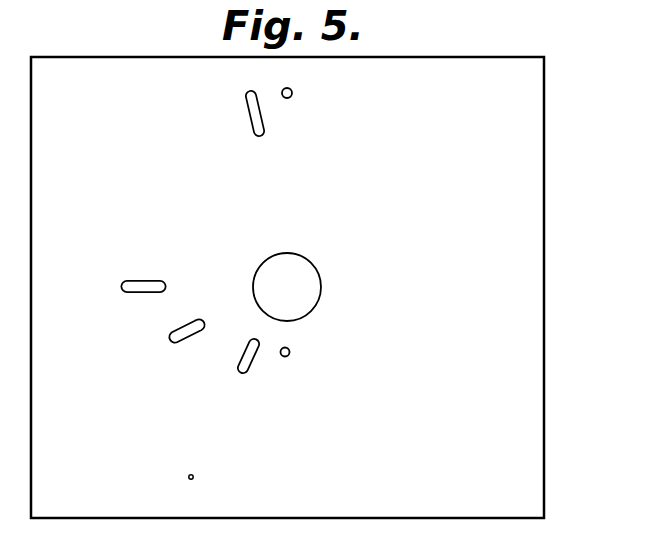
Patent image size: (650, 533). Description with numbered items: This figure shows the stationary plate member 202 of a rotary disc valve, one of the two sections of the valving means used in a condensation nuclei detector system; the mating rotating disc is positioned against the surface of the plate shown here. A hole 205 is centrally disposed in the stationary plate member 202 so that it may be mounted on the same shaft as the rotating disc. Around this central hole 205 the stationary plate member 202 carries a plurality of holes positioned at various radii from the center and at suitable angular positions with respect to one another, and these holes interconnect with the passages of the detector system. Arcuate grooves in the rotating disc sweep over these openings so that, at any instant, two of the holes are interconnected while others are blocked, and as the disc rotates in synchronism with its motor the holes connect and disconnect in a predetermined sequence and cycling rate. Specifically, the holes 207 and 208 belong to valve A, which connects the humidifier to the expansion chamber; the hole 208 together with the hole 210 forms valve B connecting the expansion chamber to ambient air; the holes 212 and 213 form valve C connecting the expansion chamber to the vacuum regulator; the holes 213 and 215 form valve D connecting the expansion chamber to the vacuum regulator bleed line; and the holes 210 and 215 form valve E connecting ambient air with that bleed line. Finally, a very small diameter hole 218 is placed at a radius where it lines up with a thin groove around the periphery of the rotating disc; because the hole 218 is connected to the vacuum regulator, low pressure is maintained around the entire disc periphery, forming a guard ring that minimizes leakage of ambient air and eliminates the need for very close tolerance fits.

The stationary plate member 202 is at (545, 122).
The hole 205 is at (317, 281).
The hole 207 is at (293, 93).
The hole 208 is at (248, 95).
The hole 210 is at (130, 282).
The hole 212 is at (290, 350).
The hole 213 is at (238, 372).
The hole 215 is at (201, 321).
The hole 218 is at (194, 477).